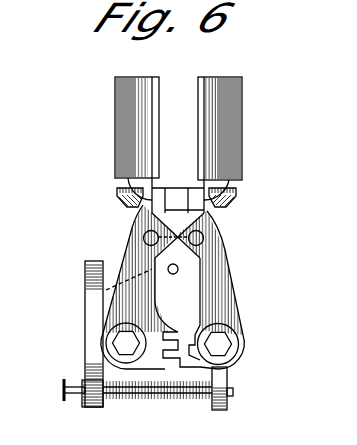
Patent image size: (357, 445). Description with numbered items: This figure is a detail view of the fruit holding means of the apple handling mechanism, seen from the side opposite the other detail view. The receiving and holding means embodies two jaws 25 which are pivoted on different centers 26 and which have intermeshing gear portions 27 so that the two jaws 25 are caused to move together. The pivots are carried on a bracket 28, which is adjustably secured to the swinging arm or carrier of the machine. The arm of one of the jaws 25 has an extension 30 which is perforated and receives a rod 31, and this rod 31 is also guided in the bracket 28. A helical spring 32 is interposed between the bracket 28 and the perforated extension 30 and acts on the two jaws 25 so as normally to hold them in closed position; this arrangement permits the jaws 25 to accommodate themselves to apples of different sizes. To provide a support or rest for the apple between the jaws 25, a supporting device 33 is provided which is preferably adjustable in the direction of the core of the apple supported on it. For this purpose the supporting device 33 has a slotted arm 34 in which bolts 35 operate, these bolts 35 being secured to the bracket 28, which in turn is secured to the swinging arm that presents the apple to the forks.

The jaws 25 is at (122, 118).
The supporting device 33 is at (232, 189).
The slotted arm 34 is at (207, 211).
The bracket 28 is at (92, 320).
The intermeshing gear portions 27 is at (205, 317).
The centers 26 is at (118, 345).
The bolts 35 is at (170, 274).
The extension 30 is at (230, 384).
The rod 31 is at (234, 392).
The helical spring 32 is at (185, 402).